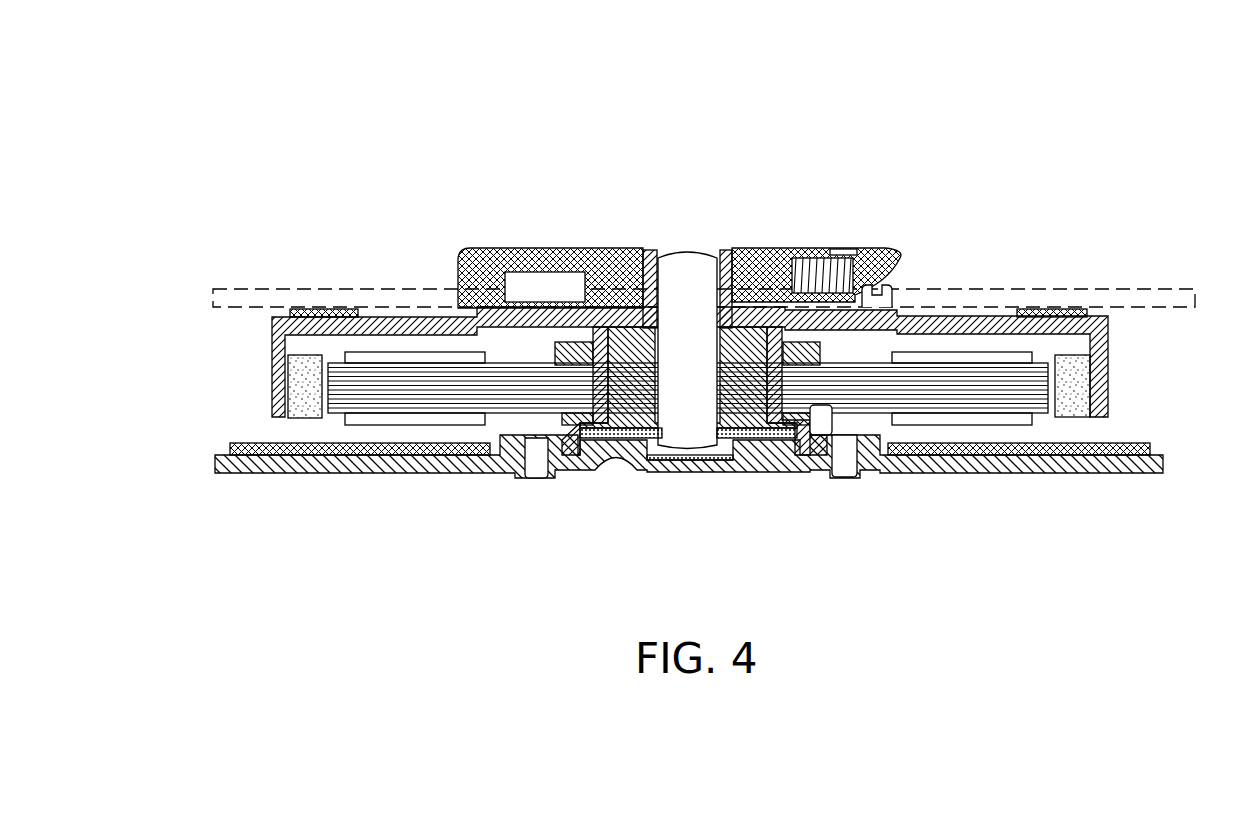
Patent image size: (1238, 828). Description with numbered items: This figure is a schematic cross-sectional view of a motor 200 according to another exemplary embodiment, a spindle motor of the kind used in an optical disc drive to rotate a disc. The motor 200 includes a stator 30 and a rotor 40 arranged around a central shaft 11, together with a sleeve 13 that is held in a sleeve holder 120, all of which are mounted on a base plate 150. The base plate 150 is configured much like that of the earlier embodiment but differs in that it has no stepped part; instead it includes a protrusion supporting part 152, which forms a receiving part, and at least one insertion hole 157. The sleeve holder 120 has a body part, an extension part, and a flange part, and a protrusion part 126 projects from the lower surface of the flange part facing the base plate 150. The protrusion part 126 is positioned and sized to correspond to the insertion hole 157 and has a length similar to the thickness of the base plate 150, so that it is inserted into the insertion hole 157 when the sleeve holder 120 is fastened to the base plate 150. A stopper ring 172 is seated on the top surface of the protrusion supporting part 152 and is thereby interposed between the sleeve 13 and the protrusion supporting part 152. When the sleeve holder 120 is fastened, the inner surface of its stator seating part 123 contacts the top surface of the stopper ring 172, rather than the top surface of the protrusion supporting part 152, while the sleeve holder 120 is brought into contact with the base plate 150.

The motor 200 is at (910, 172).
The shaft 11 is at (683, 267).
The rotor 40 is at (1117, 370).
The stator 30 is at (1042, 414).
The sleeve 13 is at (740, 412).
The sleeve holder 120 is at (546, 492).
The stator seating part 123 is at (832, 407).
The protrusion part 126 is at (826, 477).
The base plate 150 is at (973, 480).
The protrusion supporting part 152 is at (615, 457).
The insertion hole 157 is at (521, 480).
The stopper ring 172 is at (648, 462).